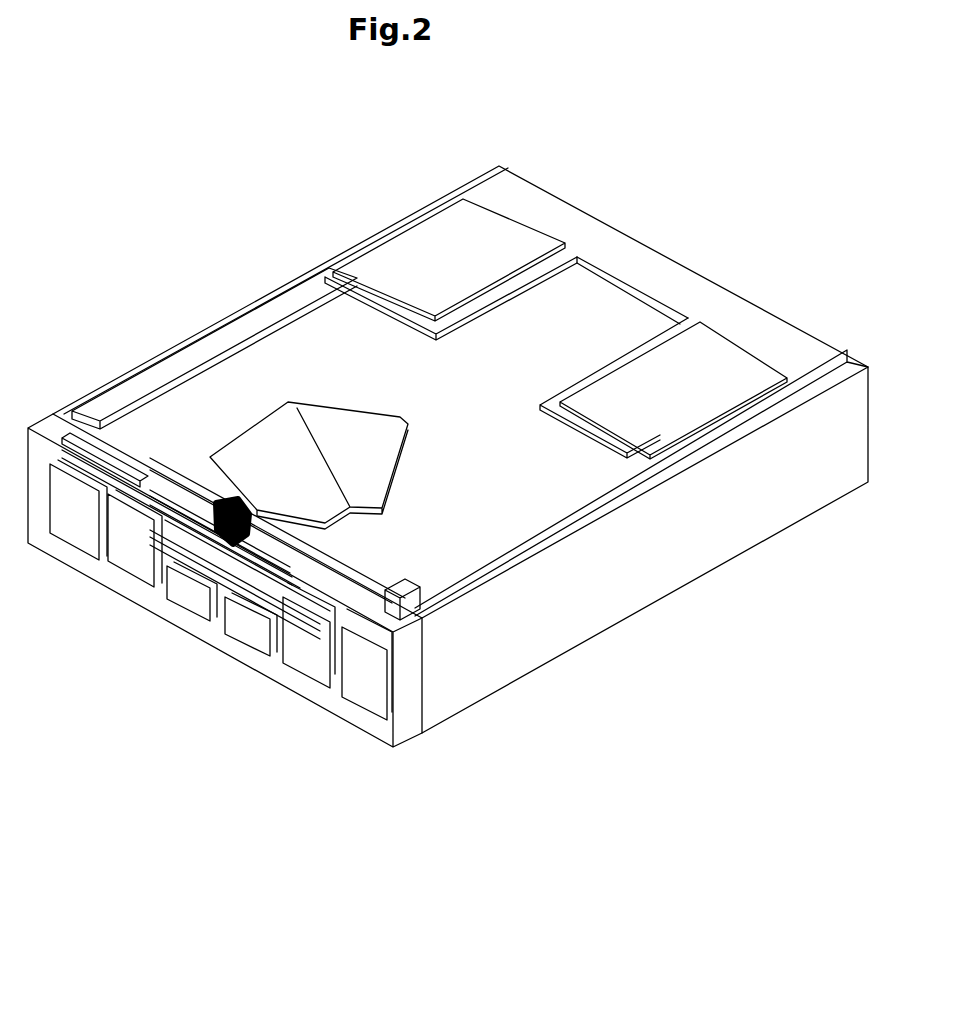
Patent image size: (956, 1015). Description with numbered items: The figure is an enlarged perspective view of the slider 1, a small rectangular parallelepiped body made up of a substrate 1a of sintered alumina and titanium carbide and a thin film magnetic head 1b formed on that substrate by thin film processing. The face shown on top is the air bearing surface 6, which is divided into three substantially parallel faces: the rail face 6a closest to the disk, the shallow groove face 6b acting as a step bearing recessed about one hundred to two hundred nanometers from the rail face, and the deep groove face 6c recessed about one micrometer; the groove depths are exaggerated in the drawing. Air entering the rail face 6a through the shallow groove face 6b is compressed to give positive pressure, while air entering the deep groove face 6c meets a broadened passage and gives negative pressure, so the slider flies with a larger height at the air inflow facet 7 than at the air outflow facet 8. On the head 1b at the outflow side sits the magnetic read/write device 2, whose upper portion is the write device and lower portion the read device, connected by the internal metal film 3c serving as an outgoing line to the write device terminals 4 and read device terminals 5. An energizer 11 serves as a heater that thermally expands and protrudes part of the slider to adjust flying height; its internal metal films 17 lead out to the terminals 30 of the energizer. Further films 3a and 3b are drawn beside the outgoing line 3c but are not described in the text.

The slider 1 is at (448, 505).
The substrate 1a is at (450, 690).
The thin film magnetic head 1b is at (398, 735).
The magnetic read/write device 2 is at (232, 480).
The connection electrode 3a is at (100, 447).
The terminal electrode bar 3b is at (362, 588).
The internal metal film 3c is at (262, 540).
The write device terminals 4 is at (65, 523).
The read device terminals 5 is at (360, 673).
The air bearing surface 6 is at (442, 269).
The rail face 6a is at (157, 477).
The shallow groove face 6b is at (240, 477).
The deep groove face 6c is at (410, 430).
The air inflow facet 7 is at (670, 248).
The air outflow facet 8 is at (258, 663).
The energizer 11 is at (320, 524).
The internal metal films 17 is at (222, 625).
The terminals of the energizer 30 is at (175, 597).